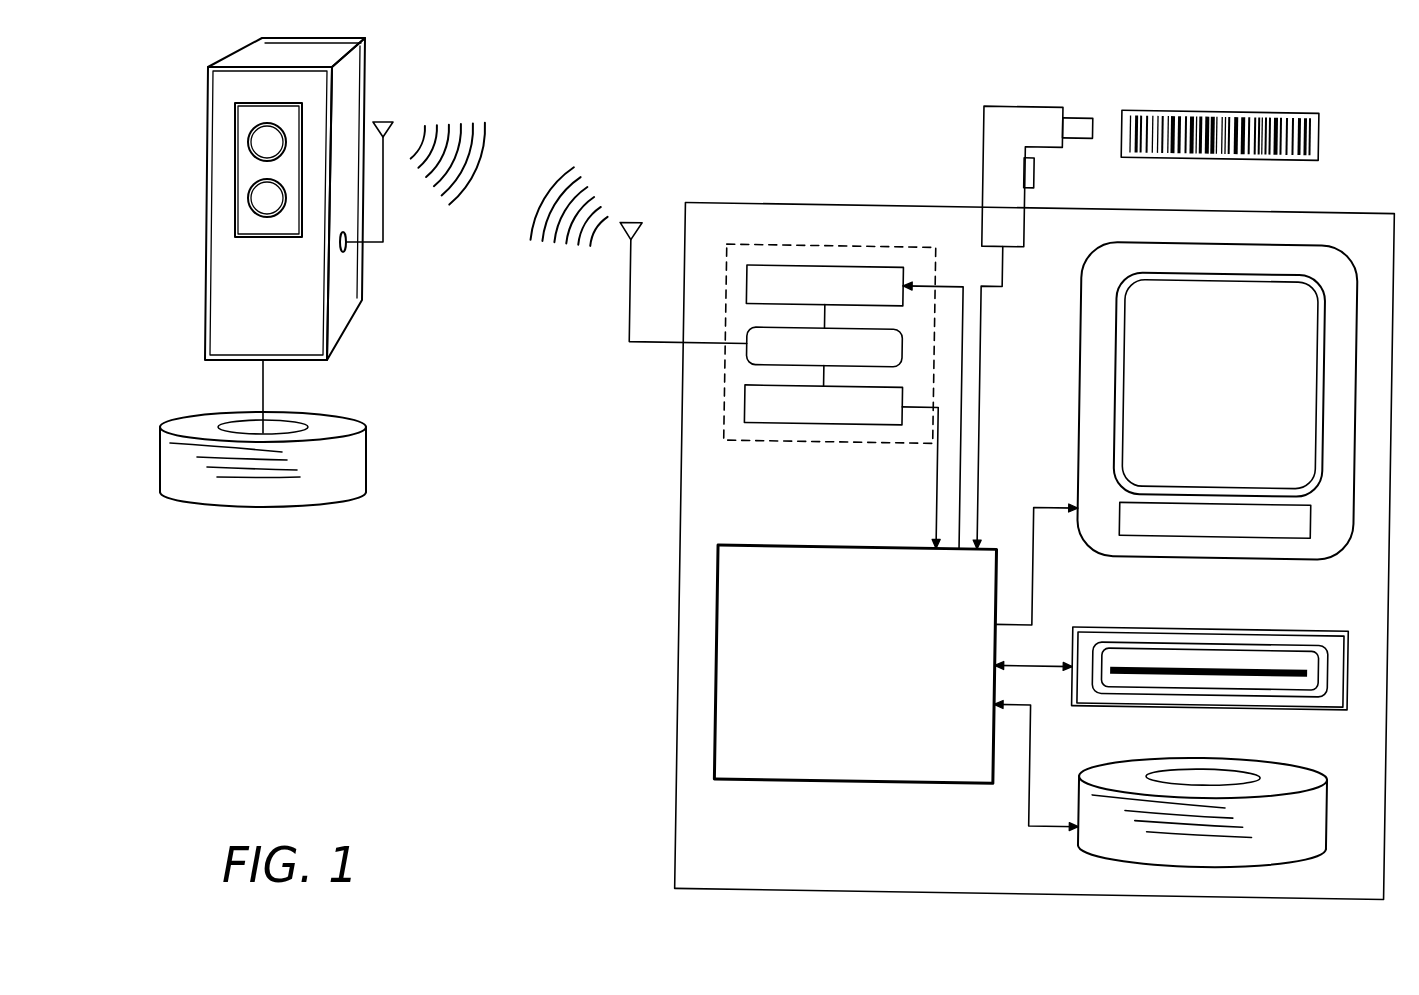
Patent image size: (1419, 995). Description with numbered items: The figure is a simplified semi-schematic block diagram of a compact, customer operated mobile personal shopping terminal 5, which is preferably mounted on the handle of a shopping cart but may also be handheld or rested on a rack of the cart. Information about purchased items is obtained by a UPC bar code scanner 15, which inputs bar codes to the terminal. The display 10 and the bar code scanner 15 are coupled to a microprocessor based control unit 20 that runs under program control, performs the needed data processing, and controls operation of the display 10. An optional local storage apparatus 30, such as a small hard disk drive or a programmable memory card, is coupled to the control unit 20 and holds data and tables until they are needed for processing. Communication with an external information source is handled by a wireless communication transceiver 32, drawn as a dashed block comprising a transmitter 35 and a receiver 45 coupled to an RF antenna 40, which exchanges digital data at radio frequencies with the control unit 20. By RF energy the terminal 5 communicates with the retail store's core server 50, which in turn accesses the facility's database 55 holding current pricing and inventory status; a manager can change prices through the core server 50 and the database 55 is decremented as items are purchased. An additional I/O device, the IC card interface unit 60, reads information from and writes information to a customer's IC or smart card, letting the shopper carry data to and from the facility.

The personal shopping terminal 5 is at (680, 803).
The display 10 is at (1091, 394).
The UPC bar code scanner 15 is at (977, 147).
The control unit 20 is at (815, 770).
The local storage apparatus 30 is at (1097, 836).
The wireless communication transceiver 32 is at (724, 425).
The transmitter 35 is at (803, 272).
The RF antenna 40 is at (743, 352).
The receiver 45 is at (799, 424).
The core server 50 is at (327, 350).
The database 55 is at (345, 477).
The IC card interface unit 60 is at (1137, 641).